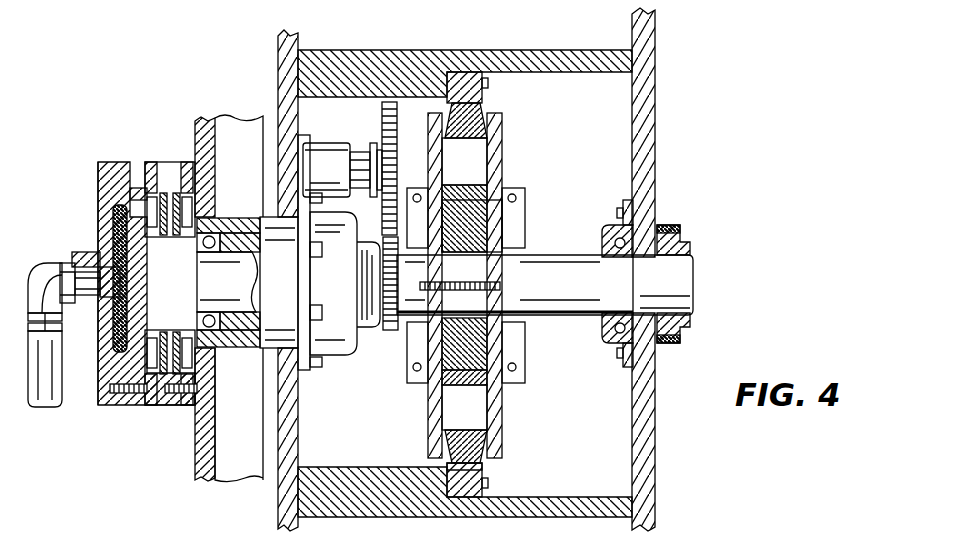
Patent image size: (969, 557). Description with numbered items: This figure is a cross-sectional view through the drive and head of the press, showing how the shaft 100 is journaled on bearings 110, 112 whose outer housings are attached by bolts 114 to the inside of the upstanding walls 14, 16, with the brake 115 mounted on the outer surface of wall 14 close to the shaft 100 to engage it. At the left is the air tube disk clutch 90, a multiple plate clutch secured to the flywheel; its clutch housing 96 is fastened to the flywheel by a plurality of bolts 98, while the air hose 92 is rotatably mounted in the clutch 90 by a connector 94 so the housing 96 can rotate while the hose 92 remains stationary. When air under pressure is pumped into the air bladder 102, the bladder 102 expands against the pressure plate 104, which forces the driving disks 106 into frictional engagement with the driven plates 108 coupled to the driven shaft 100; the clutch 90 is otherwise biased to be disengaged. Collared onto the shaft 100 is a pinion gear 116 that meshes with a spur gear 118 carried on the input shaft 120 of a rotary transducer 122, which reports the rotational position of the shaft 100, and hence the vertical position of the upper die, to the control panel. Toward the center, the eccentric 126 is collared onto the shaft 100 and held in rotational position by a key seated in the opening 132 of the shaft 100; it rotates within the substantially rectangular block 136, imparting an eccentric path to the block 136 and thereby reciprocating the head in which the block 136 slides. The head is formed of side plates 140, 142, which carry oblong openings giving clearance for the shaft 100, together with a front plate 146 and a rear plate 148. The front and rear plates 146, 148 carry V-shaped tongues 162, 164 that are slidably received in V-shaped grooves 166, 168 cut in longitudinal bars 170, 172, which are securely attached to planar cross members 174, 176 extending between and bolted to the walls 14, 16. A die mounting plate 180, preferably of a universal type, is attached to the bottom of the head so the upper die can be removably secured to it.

The upstanding wall 14 is at (648, 125).
The upstanding wall 16 is at (289, 40).
The air tube disk clutch 90 is at (78, 143).
The hose 92 is at (56, 392).
The connector 94 is at (50, 270).
The clutch housing 96 is at (112, 162).
The bolts 98 is at (118, 400).
The shaft 100 is at (556, 258).
The air bladder 102 is at (112, 225).
The pressure plate 104 is at (133, 190).
The driving disks 106 is at (181, 193).
The driven plates 108 is at (183, 250).
The bearing 110 is at (604, 213).
The bearing 112 is at (355, 378).
The bolts 114 is at (617, 352).
The brake 115 is at (675, 237).
The pinion gear 116 is at (391, 333).
The spur gear 118 is at (390, 100).
The input shaft 120 is at (361, 138).
The rotary transducer 122 is at (326, 150).
The eccentric 126 is at (490, 222).
The opening 132 is at (492, 288).
The block 136 is at (472, 190).
The side plate 140 is at (430, 140).
The side plate 142 is at (499, 125).
The front plate 146 is at (461, 141).
The rear plate 148 is at (460, 428).
The V-shaped tongue 162 is at (458, 75).
The V-shaped tongue 164 is at (478, 465).
The V-shaped groove 166 is at (505, 140).
The V-shaped groove 168 is at (480, 447).
The longitudinal bar 170 is at (462, 100).
The longitudinal bar 172 is at (478, 487).
The planar cross member 174 is at (598, 68).
The planar cross member 176 is at (596, 498).
The die mounting plate 180 is at (517, 368).